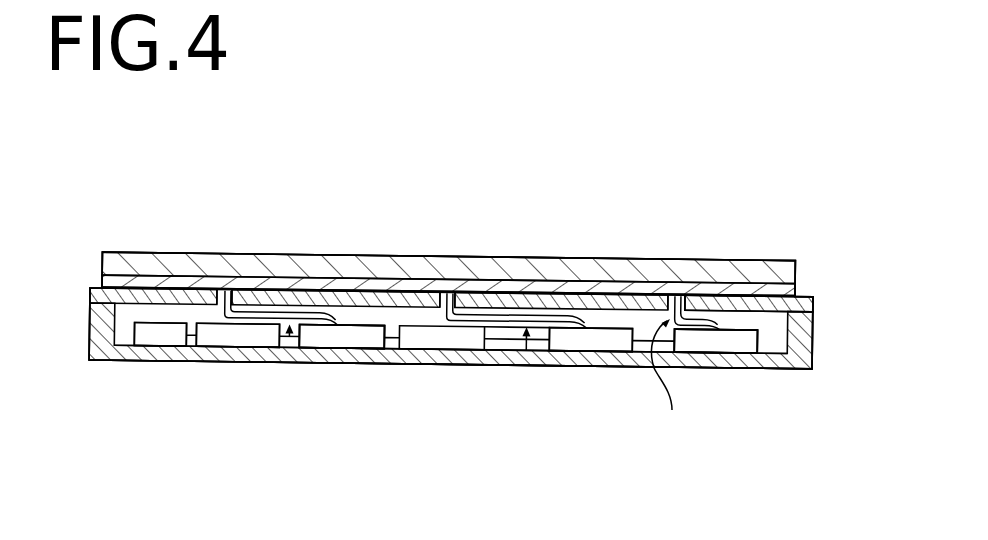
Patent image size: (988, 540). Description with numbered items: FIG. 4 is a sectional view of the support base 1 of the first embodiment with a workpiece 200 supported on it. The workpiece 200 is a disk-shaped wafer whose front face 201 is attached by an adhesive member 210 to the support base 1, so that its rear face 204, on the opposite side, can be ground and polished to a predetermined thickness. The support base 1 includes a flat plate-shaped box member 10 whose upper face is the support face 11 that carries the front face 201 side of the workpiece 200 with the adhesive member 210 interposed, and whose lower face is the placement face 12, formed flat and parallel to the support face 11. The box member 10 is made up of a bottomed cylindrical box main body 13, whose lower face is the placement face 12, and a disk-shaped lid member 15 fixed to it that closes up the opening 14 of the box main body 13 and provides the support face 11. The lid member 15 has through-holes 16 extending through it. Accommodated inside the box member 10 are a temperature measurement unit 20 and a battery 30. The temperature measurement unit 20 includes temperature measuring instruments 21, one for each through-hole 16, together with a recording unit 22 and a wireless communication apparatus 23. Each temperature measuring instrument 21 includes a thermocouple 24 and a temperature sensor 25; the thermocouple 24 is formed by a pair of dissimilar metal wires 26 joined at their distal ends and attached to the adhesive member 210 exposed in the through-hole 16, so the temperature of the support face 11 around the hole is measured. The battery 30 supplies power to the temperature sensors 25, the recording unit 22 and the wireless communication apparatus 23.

The support base 1 is at (863, 328).
The box member 10 is at (875, 440).
The support face 11 is at (752, 318).
The placement face 12 is at (620, 368).
The box main body 13 is at (828, 342).
The opening 14 is at (818, 303).
The lid member 15 is at (818, 303).
The through-hole 16 is at (672, 294).
The temperature measurement unit 20 is at (330, 478).
The temperature measuring instrument 21 is at (350, 437).
The recording unit 22 is at (236, 333).
The wireless communication apparatus 23 is at (160, 333).
The thermocouple 24 is at (525, 364).
The temperature sensor 25 is at (715, 337).
The metal wires 26 is at (738, 312).
The battery 30 is at (442, 333).
The workpiece 200 is at (85, 243).
The front face 201 is at (112, 276).
The rear face 204 is at (127, 251).
The adhesive member 210 is at (805, 296).